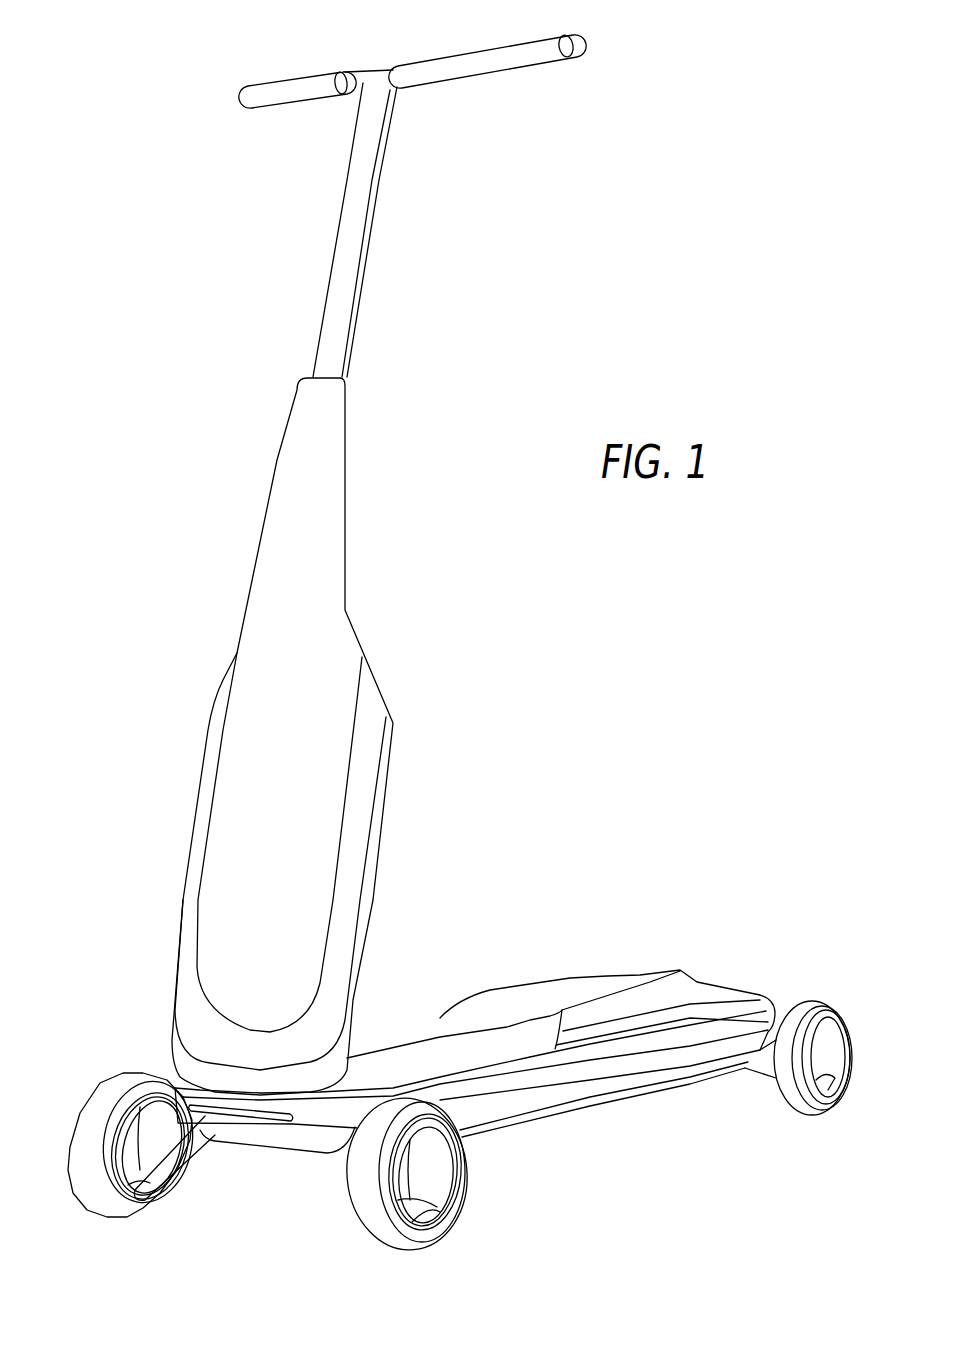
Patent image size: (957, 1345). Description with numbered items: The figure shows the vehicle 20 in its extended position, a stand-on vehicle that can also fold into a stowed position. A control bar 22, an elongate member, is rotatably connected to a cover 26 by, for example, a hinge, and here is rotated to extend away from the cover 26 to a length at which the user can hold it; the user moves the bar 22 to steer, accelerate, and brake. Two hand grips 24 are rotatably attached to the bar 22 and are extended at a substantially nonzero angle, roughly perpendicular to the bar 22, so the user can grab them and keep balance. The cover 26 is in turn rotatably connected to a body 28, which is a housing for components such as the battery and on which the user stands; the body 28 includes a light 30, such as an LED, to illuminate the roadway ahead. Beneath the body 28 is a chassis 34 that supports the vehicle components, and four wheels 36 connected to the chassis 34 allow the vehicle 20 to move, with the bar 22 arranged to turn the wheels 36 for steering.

The vehicle 20 is at (84, 122).
The control bar 22 is at (337, 285).
The hand grip 24 is at (487, 63).
The cover 26 is at (222, 830).
The body 28 is at (723, 1010).
The light 30 is at (260, 1120).
The chassis 34 is at (595, 1100).
The wheels 36 is at (807, 1117).